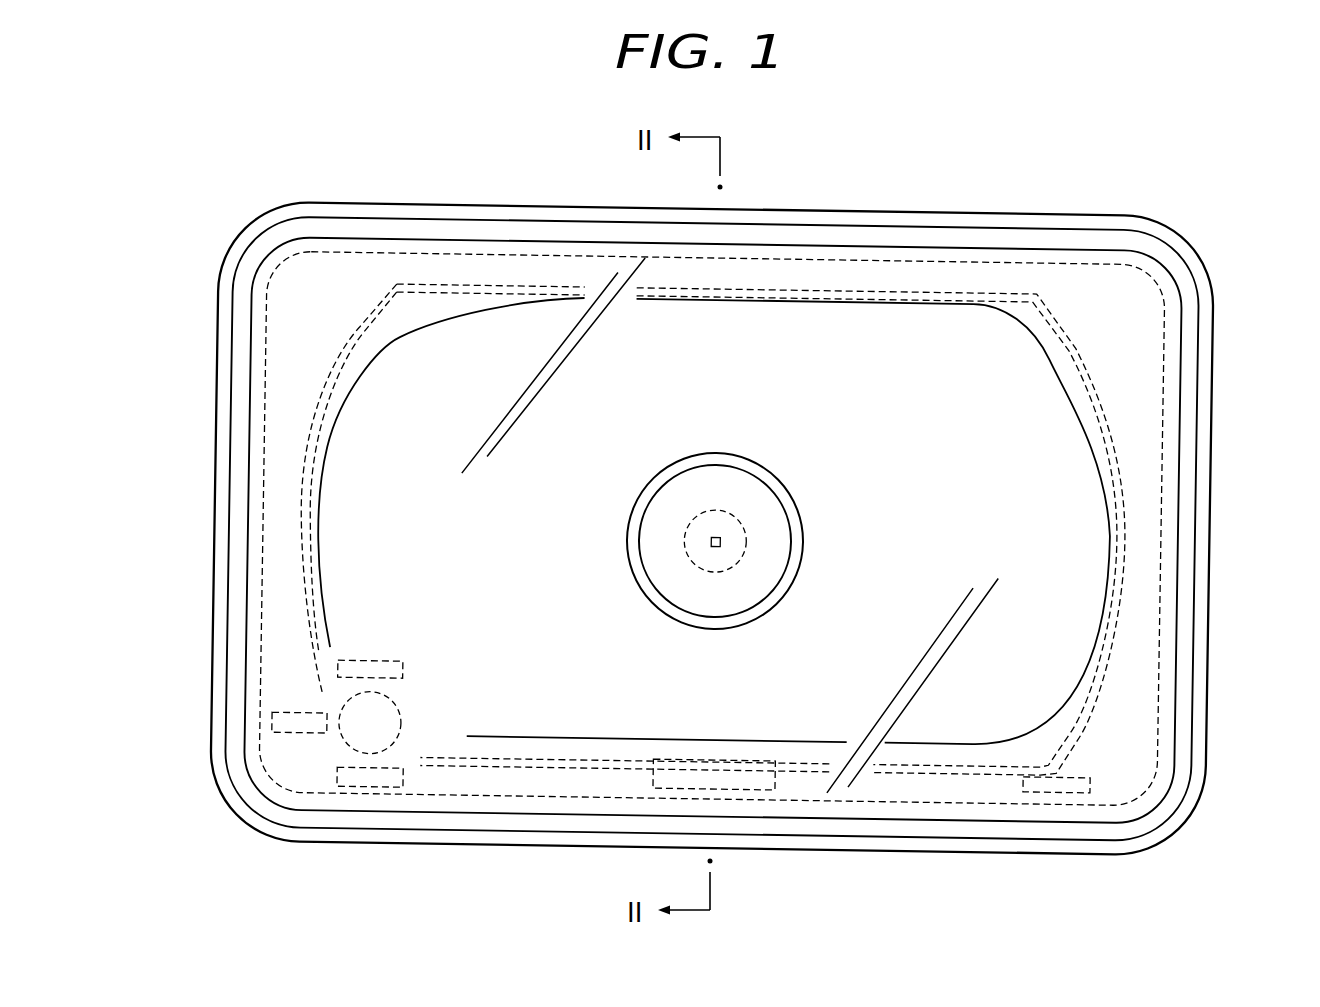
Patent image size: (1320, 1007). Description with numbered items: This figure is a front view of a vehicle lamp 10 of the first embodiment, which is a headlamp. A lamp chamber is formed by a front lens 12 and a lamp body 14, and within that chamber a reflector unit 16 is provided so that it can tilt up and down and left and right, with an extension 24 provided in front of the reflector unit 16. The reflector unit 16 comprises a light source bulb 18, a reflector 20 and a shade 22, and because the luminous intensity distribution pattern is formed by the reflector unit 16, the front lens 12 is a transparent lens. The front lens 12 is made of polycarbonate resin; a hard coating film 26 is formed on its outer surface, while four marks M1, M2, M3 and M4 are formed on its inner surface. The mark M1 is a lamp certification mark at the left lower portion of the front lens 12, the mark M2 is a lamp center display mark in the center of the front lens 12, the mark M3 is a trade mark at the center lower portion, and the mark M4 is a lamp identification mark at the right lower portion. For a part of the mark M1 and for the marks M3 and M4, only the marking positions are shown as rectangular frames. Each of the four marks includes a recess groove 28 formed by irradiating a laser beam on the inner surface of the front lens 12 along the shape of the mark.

The vehicle lamp 10 is at (1181, 201).
The front lens 12 is at (875, 240).
The lamp body 14 is at (753, 207).
The reflector unit 16 is at (1110, 351).
The light source bulb 18 is at (746, 562).
The reflector 20 is at (1141, 634).
The shade 22 is at (650, 488).
The extension 24 is at (1089, 435).
The hard coating film 26 is at (1075, 527).
The recess groove 28 is at (722, 538).
The lamp certification mark M1 is at (389, 662).
The lamp center display mark M2 is at (718, 523).
The trade mark M3 is at (742, 760).
The lamp identification mark M4 is at (1046, 765).